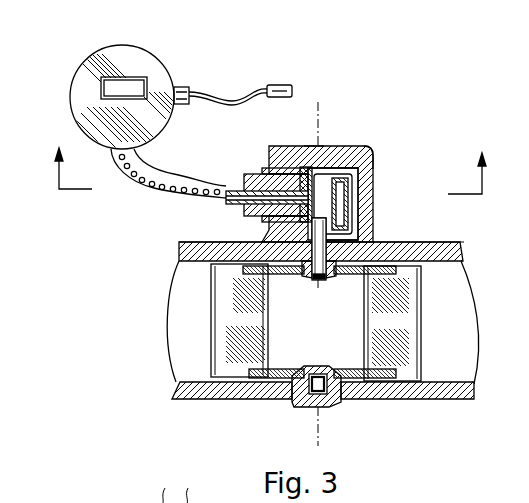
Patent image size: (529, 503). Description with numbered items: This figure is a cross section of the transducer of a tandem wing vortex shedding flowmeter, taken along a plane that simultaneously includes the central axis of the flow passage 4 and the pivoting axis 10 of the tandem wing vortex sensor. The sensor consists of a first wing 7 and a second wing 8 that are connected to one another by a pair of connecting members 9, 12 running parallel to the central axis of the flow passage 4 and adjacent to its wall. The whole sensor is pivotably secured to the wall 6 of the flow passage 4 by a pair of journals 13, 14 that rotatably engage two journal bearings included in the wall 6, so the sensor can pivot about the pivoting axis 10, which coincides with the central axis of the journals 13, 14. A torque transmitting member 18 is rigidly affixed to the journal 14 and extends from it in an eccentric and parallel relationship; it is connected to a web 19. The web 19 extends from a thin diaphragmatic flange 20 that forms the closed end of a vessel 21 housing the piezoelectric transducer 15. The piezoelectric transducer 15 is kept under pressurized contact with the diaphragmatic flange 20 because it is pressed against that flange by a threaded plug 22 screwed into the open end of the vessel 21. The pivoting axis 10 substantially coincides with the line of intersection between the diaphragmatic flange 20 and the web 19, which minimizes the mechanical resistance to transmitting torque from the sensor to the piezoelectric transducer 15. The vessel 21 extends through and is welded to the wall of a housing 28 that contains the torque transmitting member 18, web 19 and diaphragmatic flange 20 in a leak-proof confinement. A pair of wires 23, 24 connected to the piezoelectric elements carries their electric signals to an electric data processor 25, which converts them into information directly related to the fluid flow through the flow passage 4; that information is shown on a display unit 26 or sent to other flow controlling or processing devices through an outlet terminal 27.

The flow passage 4 is at (459, 381).
The wall of the flow passage 6 is at (291, 388).
The first wing 7 is at (229, 312).
The second wing 8 is at (394, 318).
The connecting member 9 is at (273, 360).
The pivoting axis 10 is at (315, 103).
The connecting member 12 is at (334, 302).
The journal 13 is at (324, 383).
The journal 14 is at (366, 240).
The piezoelectric transducer 15 is at (272, 146).
The torque transmitting member 18 is at (344, 190).
The web 19 is at (333, 143).
The diaphragmatic flange 20 is at (347, 197).
The vessel 21 is at (307, 142).
The threaded plug 22 is at (232, 196).
The wire 23 is at (127, 176).
The wire 24 is at (157, 168).
The electric data processor 25 is at (138, 44).
The display unit 26 is at (121, 72).
The outlet terminal 27 is at (280, 82).
The housing 28 is at (364, 143).